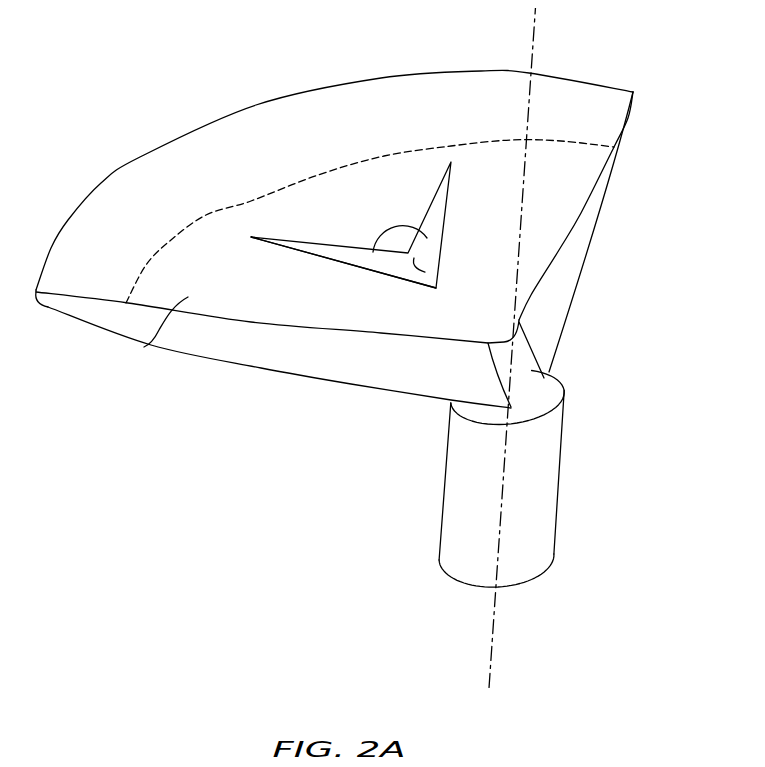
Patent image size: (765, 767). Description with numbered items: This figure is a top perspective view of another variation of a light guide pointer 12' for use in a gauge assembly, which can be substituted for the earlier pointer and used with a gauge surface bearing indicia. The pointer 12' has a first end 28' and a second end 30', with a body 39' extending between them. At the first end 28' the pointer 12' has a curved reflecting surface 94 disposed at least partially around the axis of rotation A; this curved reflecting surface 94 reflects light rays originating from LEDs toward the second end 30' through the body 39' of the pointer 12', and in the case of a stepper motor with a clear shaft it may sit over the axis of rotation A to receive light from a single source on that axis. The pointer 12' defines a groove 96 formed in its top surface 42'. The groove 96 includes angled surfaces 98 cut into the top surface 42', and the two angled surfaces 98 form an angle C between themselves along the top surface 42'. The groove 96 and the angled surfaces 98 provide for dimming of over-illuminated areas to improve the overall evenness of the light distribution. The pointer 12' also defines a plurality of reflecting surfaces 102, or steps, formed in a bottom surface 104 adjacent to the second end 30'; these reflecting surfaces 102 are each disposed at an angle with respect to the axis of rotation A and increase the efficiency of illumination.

The light guide pointer 12' is at (361, 249).
The second end 30' is at (334, 180).
The top surface 42' is at (584, 206).
The reflecting surfaces 102 is at (87, 321).
The bottom surface 104 is at (168, 367).
The body 39' is at (138, 337).
The first end 28' is at (467, 488).
The curved reflecting surface 94 is at (528, 380).
The angled surfaces 98 is at (353, 257).
The groove 96 is at (409, 271).
The angle C is at (388, 222).
The axis of rotation A is at (492, 623).